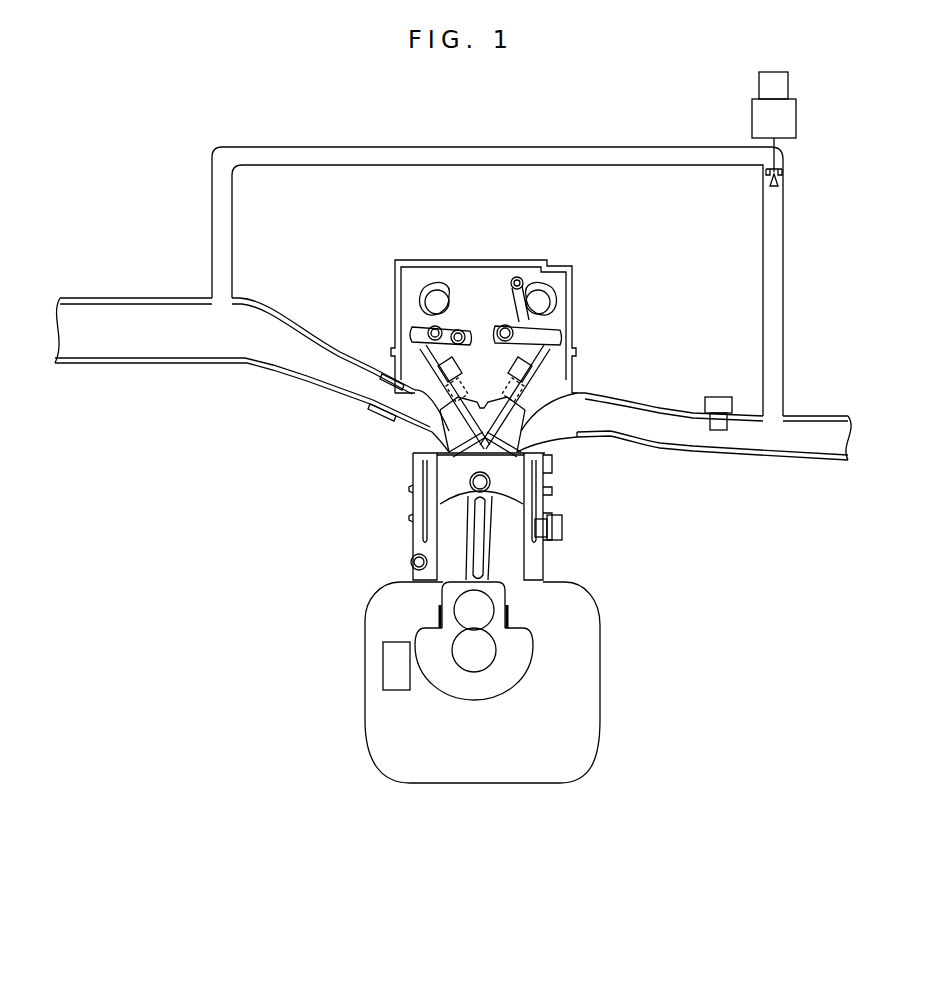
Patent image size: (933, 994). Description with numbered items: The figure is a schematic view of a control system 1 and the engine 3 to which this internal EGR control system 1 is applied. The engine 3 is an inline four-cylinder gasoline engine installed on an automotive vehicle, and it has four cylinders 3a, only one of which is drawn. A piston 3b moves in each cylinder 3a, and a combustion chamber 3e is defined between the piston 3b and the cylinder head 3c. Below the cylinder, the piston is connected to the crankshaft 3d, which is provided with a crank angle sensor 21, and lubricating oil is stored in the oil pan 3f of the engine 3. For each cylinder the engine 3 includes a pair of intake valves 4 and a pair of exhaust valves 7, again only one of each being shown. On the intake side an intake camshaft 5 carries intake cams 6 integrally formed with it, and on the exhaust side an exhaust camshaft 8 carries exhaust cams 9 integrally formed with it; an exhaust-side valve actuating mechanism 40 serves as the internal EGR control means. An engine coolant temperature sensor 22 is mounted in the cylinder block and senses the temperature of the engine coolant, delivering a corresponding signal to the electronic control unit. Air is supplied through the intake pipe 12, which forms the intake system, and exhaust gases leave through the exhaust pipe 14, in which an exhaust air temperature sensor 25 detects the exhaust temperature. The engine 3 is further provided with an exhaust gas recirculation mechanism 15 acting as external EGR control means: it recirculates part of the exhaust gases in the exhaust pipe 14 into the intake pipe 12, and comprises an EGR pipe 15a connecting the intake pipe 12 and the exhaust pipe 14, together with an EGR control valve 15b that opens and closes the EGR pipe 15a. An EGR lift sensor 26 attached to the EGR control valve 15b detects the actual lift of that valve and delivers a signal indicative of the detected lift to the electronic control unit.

The control system 1 is at (676, 91).
The engine 3 is at (563, 254).
The cylinder 3a is at (430, 548).
The piston 3b is at (450, 488).
The cylinder head 3c is at (578, 357).
The crankshaft 3d is at (490, 656).
The combustion chamber 3e is at (488, 452).
The oil pan 3f is at (430, 784).
The intake valve 4 is at (433, 428).
The intake camshaft 5 is at (425, 300).
The intake cam 6 is at (437, 289).
The exhaust valve 7 is at (546, 446).
The exhaust camshaft 8 is at (548, 298).
The exhaust cam 9 is at (556, 323).
The intake pipe 12 is at (97, 364).
The exhaust pipe 14 is at (760, 461).
The exhaust gas recirculation mechanism 15 is at (860, 147).
The EGR pipe 15a is at (480, 147).
The EGR control valve 15b is at (797, 114).
The crank angle sensor 21 is at (383, 673).
The engine coolant temperature sensor 22 is at (563, 527).
The exhaust air temperature sensor 25 is at (718, 397).
The EGR lift sensor 26 is at (788, 83).
The exhaust-side valve actuating mechanism 40 is at (527, 284).